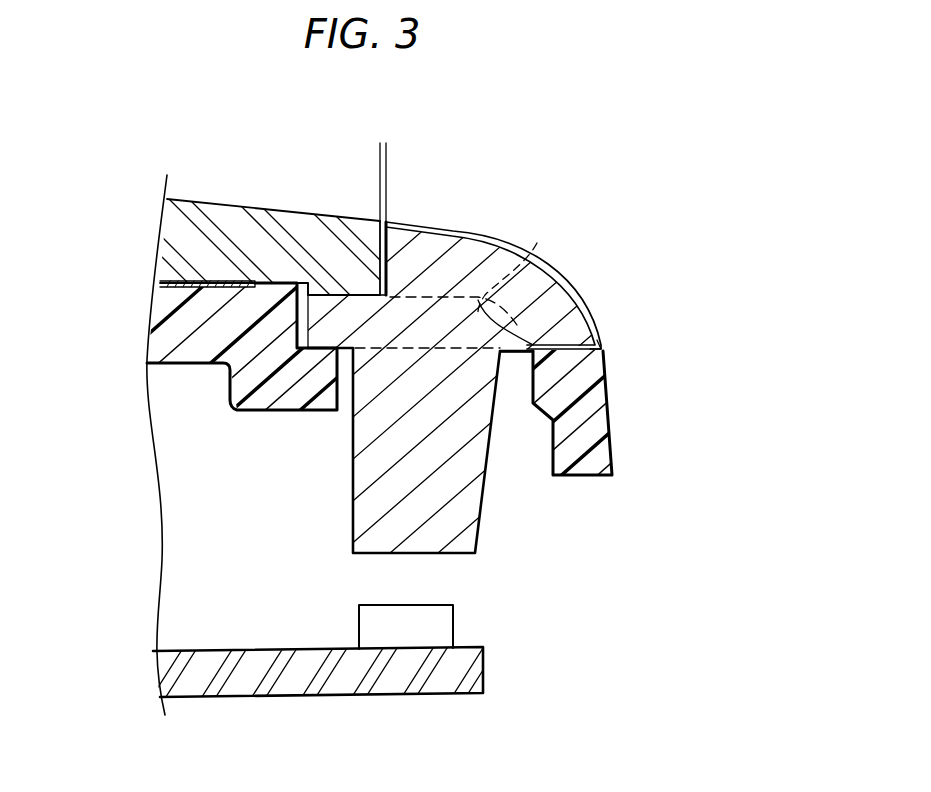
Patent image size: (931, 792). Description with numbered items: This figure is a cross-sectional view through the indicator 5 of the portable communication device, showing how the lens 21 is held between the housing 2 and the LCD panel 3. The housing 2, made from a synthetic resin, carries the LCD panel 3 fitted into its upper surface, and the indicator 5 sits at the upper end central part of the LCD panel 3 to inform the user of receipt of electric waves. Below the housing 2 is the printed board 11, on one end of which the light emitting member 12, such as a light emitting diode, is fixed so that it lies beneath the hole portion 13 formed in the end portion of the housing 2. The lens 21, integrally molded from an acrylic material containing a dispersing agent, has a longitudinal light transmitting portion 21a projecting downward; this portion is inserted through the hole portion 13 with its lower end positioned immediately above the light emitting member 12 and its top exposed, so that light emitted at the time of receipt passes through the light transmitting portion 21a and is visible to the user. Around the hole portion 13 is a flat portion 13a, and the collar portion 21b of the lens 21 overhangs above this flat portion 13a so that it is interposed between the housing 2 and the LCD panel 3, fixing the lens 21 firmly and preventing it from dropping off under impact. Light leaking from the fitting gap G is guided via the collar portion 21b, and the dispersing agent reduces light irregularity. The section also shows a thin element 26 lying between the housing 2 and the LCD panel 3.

The housing 2 is at (290, 398).
The LCD panel 3 is at (293, 218).
The indicator 5 is at (600, 216).
The printed board 11 is at (468, 665).
The light emitting member 12 is at (437, 628).
The hole portion 13 is at (517, 360).
The flat portion 13a is at (600, 342).
The lens 21 is at (570, 268).
The light transmitting portion 21a is at (450, 250).
The collar portion 21b is at (537, 255).
The seal 26 is at (163, 285).
The fitting gap G is at (340, 155).